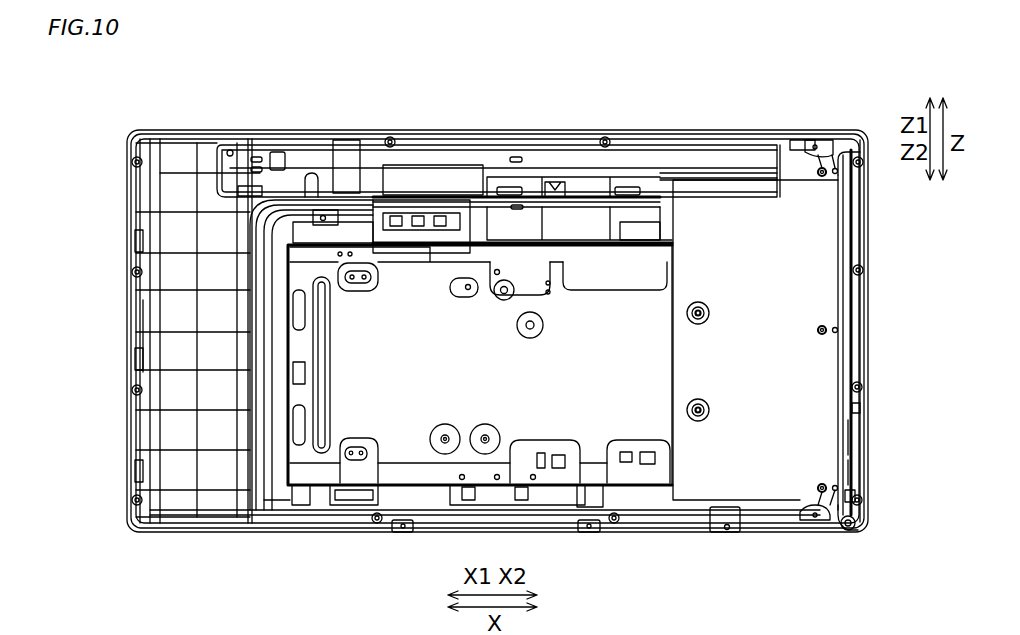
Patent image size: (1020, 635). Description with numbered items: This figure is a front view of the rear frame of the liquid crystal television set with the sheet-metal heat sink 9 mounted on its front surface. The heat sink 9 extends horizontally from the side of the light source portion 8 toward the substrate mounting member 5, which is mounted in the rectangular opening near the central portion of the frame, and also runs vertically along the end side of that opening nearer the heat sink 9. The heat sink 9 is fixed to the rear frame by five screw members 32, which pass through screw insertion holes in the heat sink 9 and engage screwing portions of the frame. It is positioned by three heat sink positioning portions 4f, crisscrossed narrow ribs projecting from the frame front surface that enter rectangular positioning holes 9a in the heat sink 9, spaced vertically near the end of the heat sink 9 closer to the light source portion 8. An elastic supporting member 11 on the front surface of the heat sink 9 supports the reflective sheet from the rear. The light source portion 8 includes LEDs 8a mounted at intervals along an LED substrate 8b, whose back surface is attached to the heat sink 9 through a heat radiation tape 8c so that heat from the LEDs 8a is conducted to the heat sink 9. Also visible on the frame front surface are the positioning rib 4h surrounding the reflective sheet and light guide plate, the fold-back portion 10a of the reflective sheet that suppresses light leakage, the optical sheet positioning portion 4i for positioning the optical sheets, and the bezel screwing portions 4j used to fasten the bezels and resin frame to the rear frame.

The optical sheet positioning portion 4i is at (190, 143).
The bezel screwing portions 4j is at (132, 162).
The positioning rib 4h is at (283, 147).
The heat sink positioning portions 4f is at (828, 142).
The fold-back portion 10a is at (238, 147).
The heat sink 9 is at (790, 160).
The positioning holes 9a is at (822, 168).
The elastic supporting member 11 is at (860, 152).
The screw members 32 is at (688, 316).
The substrate mounting member 5 is at (390, 475).
The light source portion 8 is at (915, 437).
The LEDs 8a is at (857, 472).
The LED substrate 8b is at (856, 437).
The heat radiation tape 8c is at (860, 410).